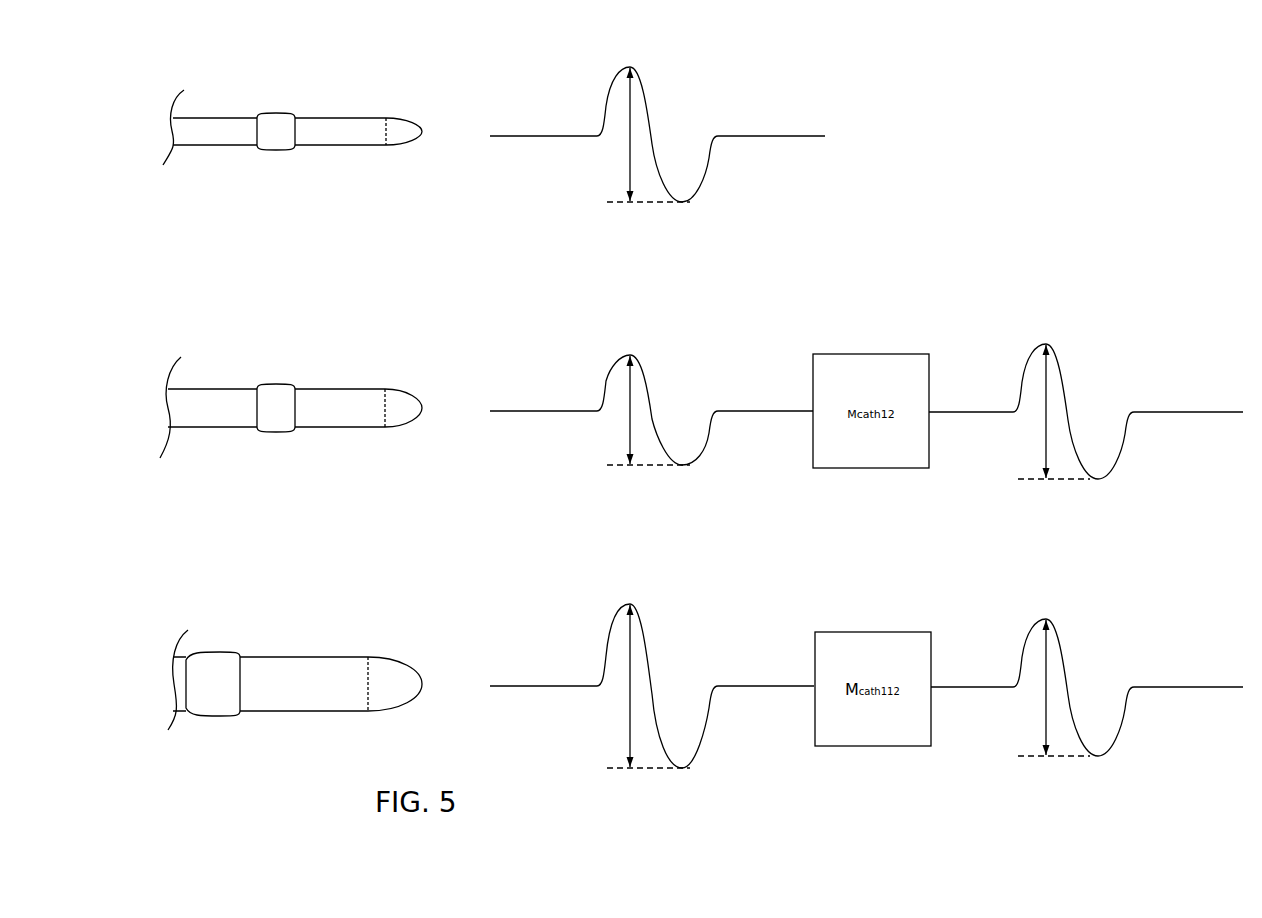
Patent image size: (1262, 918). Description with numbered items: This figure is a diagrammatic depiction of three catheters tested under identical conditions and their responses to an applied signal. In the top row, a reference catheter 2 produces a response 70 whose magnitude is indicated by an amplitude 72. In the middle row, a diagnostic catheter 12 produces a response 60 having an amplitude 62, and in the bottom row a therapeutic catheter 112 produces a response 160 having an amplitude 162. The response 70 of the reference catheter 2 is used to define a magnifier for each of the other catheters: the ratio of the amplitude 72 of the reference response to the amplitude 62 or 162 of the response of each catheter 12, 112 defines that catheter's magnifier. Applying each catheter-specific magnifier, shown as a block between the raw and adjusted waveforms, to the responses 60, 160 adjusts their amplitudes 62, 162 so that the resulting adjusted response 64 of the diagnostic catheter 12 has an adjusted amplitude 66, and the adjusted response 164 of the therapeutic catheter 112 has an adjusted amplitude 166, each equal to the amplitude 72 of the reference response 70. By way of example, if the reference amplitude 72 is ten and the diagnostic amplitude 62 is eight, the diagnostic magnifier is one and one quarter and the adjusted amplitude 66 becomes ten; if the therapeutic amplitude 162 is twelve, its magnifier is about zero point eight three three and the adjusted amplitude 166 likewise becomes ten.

The reference catheter 2 is at (401, 86).
The diagnostic catheter 12 is at (387, 350).
The therapeutic catheter 112 is at (375, 614).
The response of the reference catheter 70 is at (659, 84).
The amplitude of the reference catheter response 72 is at (628, 147).
The response of the diagnostic catheter 60 is at (662, 380).
The amplitude of the diagnostic catheter response 62 is at (628, 424).
The adjusted response of the diagnostic catheter 64 is at (1079, 373).
The adjusted amplitude of the diagnostic catheter response 66 is at (1044, 418).
The response of the therapeutic catheter 160 is at (662, 650).
The amplitude of the therapeutic catheter response 162 is at (628, 716).
The adjusted response of the therapeutic catheter 164 is at (1077, 640).
The adjusted amplitude of the therapeutic catheter response 166 is at (1044, 707).